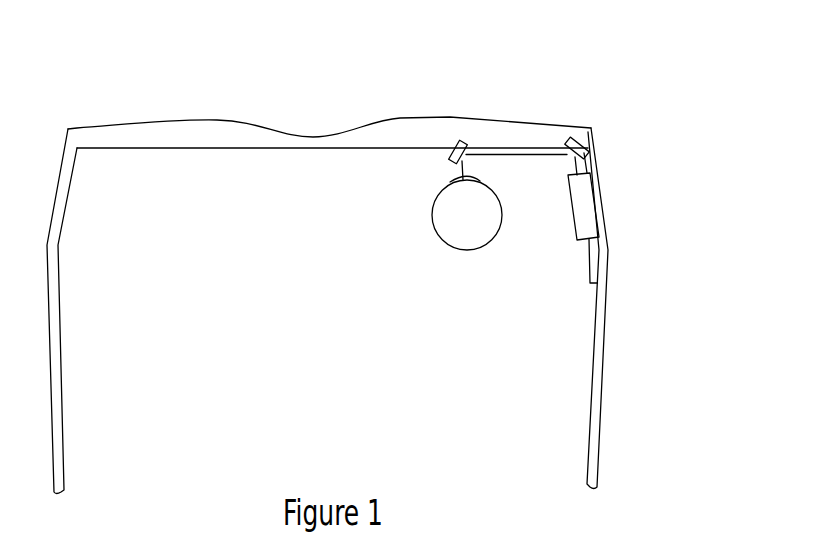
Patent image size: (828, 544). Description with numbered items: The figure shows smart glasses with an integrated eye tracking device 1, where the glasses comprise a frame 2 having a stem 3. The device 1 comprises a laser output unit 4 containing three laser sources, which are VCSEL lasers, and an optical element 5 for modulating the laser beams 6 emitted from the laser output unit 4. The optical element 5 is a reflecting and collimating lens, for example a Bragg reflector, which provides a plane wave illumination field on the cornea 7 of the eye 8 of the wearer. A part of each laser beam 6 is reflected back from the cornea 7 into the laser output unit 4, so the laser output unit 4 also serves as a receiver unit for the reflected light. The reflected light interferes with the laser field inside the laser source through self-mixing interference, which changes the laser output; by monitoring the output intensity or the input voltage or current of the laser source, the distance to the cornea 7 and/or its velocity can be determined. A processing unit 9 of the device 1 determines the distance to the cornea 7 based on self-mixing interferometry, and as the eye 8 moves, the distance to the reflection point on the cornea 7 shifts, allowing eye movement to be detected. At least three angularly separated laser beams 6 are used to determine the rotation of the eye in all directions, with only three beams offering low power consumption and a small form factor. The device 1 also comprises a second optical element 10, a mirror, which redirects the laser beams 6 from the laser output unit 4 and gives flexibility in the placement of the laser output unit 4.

The eye tracking device 1 is at (647, 138).
The frame 2 is at (549, 128).
The stem 3 is at (605, 300).
The laser output unit 4 is at (586, 201).
The optical element 5 is at (461, 141).
The laser beams 6 is at (576, 164).
The cornea 7 is at (452, 182).
The eye 8 is at (461, 227).
The processing unit 9 is at (588, 268).
The second optical element 10 is at (579, 147).